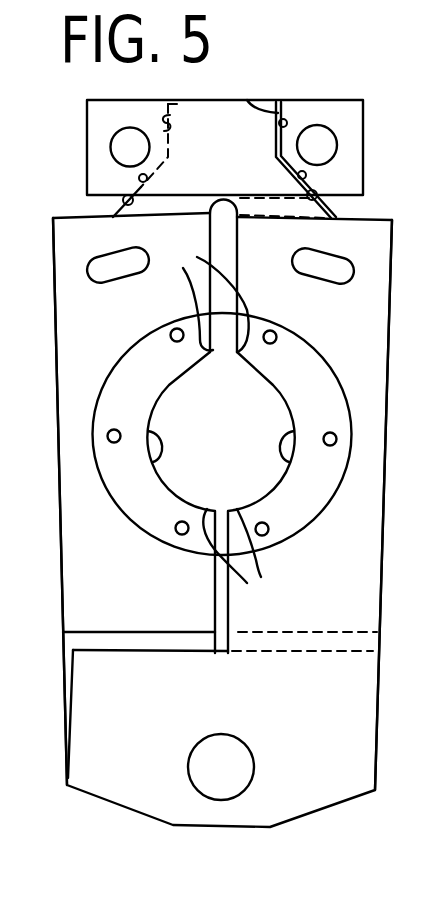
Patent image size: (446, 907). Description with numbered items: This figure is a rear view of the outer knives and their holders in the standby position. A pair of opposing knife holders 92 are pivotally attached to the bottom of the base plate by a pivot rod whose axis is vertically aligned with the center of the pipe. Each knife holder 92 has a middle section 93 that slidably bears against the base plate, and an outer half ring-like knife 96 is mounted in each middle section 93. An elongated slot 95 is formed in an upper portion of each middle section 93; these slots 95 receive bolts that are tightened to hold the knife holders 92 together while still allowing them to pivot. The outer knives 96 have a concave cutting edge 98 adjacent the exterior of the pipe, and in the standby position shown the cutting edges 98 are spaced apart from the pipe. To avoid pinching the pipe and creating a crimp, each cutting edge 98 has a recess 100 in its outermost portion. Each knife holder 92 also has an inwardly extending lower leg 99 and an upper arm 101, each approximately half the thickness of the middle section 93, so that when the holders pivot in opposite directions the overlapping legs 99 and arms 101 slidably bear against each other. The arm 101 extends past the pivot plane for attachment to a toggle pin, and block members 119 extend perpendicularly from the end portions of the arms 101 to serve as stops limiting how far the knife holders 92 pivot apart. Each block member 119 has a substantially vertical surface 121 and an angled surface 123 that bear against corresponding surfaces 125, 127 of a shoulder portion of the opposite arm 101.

The knife holder 92 is at (60, 514).
The middle section 93 is at (58, 383).
The elongated slot 95 is at (123, 281).
The outer knife 96 is at (132, 345).
The cutting edge 98 is at (157, 463).
The lower leg 99 is at (128, 768).
The recess 100 is at (221, 424).
The upper arm 101 is at (278, 102).
The block member 119 is at (105, 107).
The vertical surface 121 is at (247, 100).
The angled surface 123 is at (118, 200).
The shoulder surface 125 is at (280, 121).
The shoulder surface 127 is at (297, 175).